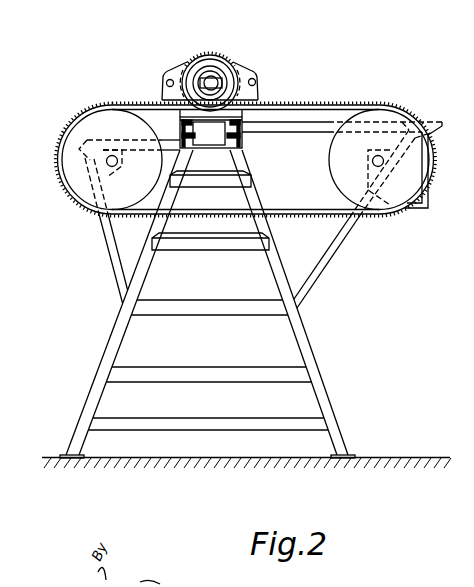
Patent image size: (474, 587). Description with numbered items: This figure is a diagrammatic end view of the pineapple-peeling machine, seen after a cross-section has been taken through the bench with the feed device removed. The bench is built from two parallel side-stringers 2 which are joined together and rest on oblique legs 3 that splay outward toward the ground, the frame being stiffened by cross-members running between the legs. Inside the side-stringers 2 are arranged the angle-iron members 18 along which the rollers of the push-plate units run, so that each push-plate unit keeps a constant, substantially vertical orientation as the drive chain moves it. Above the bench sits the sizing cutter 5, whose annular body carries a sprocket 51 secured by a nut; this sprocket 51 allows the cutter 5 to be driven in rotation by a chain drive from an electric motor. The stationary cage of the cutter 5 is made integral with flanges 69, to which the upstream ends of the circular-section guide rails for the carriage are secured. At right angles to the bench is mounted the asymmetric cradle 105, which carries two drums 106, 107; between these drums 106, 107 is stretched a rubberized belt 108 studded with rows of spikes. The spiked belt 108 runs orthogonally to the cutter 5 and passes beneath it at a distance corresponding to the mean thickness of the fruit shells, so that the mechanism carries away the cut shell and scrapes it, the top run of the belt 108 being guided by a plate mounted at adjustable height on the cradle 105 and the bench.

The side-stringers 2 is at (182, 126).
The oblique legs 3 is at (108, 352).
The sizing cutter 5 is at (202, 74).
The angle-iron members 18 is at (233, 135).
The sprocket 51 is at (223, 55).
The flanges 69 is at (240, 100).
The asymmetric cradle 105 is at (320, 133).
The drum 106 is at (70, 185).
The drum 107 is at (405, 183).
The rubberized belt 108 is at (327, 104).